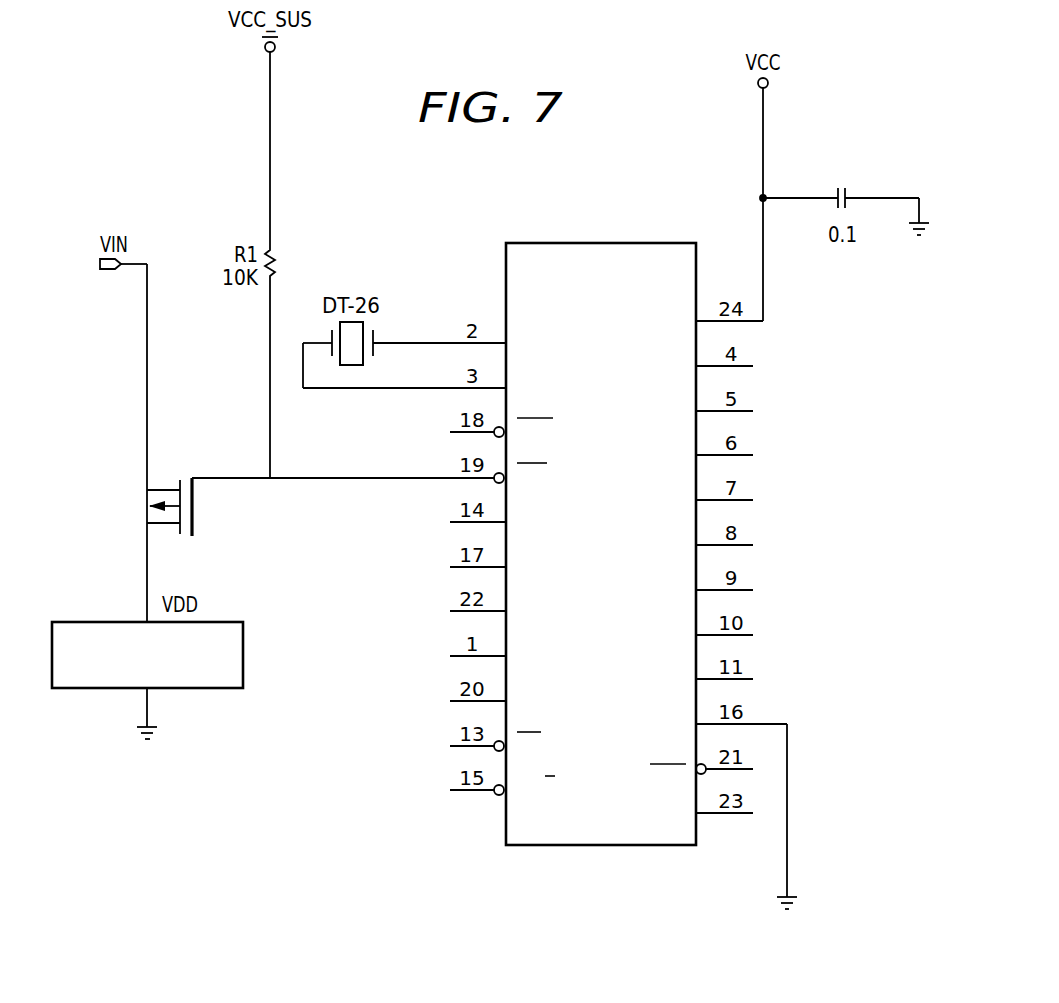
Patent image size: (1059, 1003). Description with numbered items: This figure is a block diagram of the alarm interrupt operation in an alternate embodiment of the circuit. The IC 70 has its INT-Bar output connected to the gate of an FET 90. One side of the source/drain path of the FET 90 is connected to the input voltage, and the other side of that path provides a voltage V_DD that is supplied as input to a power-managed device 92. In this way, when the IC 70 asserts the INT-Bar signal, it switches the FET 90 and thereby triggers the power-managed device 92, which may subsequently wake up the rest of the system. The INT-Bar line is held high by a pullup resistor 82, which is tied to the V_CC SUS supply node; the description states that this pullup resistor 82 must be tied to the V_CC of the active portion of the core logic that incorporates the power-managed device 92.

The IC 70 is at (600, 846).
The INT-Bar pullup resistor 82 is at (278, 263).
The FET 90 is at (134, 497).
The power-managed device 92 is at (101, 690).